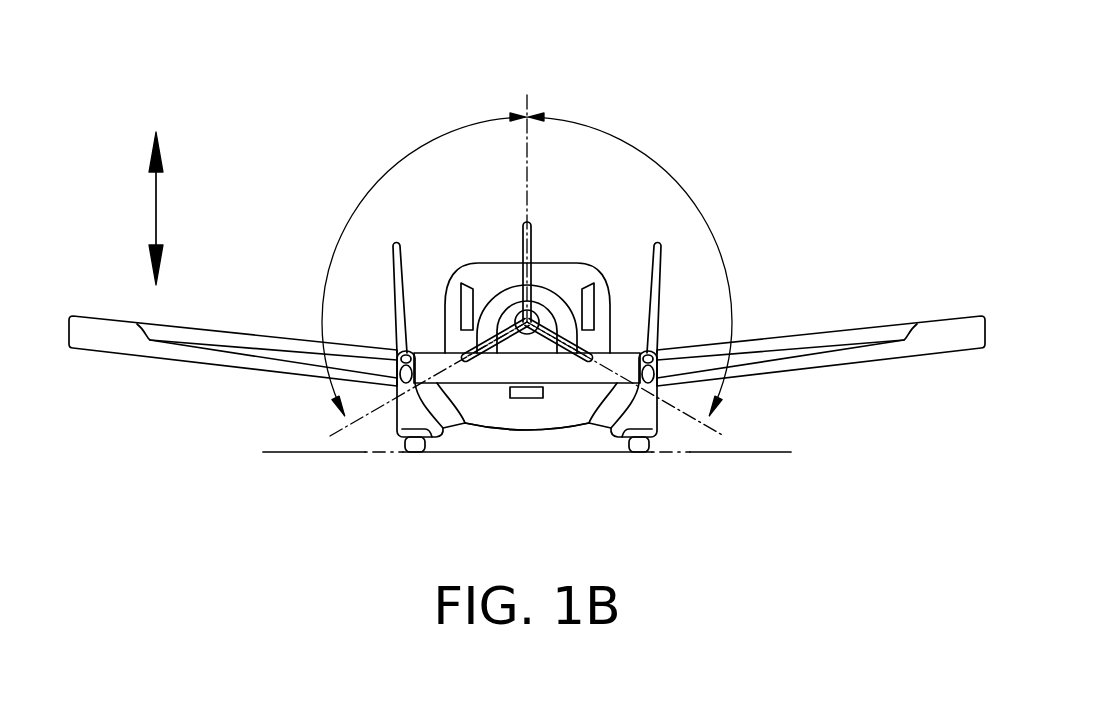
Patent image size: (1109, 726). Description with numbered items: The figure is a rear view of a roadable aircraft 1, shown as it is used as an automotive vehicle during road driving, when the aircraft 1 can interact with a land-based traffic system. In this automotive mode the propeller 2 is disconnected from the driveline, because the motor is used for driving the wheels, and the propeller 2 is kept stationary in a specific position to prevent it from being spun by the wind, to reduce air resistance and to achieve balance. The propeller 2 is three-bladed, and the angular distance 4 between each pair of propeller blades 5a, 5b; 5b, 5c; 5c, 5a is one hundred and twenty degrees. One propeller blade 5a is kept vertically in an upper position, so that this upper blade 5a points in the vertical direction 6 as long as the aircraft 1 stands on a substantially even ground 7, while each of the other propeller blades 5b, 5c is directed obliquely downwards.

The roadable aircraft 1 is at (790, 140).
The propeller 2 is at (533, 306).
The angular distance 4 is at (347, 217).
The propeller blade 5a is at (520, 244).
The propeller blade 5b is at (562, 357).
The propeller blade 5c is at (487, 357).
The vertical direction 6 is at (153, 208).
The ground 7 is at (302, 452).